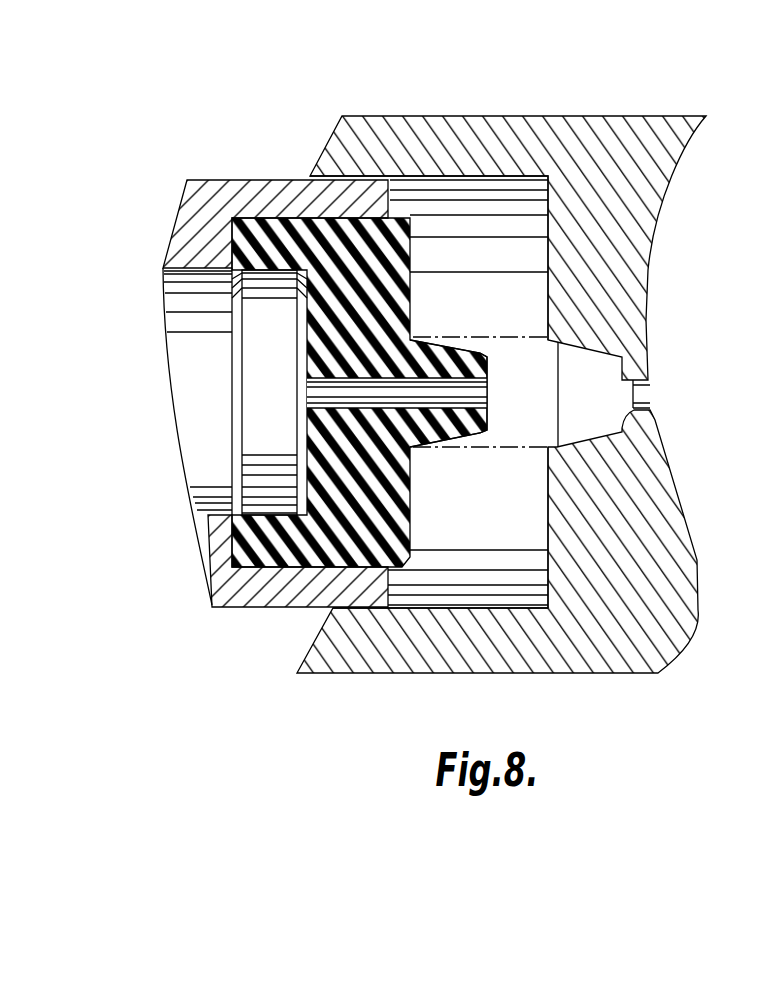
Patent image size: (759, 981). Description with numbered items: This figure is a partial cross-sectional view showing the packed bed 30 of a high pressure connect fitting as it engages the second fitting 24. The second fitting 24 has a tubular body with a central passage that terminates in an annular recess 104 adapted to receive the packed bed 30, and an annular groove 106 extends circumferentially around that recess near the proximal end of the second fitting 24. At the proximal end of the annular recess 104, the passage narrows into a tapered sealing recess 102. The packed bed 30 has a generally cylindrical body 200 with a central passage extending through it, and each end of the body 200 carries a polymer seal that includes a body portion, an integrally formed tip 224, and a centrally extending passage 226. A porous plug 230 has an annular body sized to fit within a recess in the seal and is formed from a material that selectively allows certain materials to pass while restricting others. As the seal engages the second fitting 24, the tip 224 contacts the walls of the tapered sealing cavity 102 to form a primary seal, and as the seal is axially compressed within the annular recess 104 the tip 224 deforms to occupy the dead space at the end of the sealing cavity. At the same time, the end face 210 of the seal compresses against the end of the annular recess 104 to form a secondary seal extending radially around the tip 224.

The second fitting 24 is at (573, 115).
The packed bed 30 is at (176, 175).
The tapered sealing recess 102 is at (598, 357).
The annular recess 104 is at (478, 207).
The annular groove 106 is at (548, 537).
The cylindrical body 200 is at (280, 212).
The end face 210 is at (410, 293).
The tip 224 is at (455, 440).
The centrally extending passage 226 is at (262, 567).
The porous plug 230 is at (237, 422).